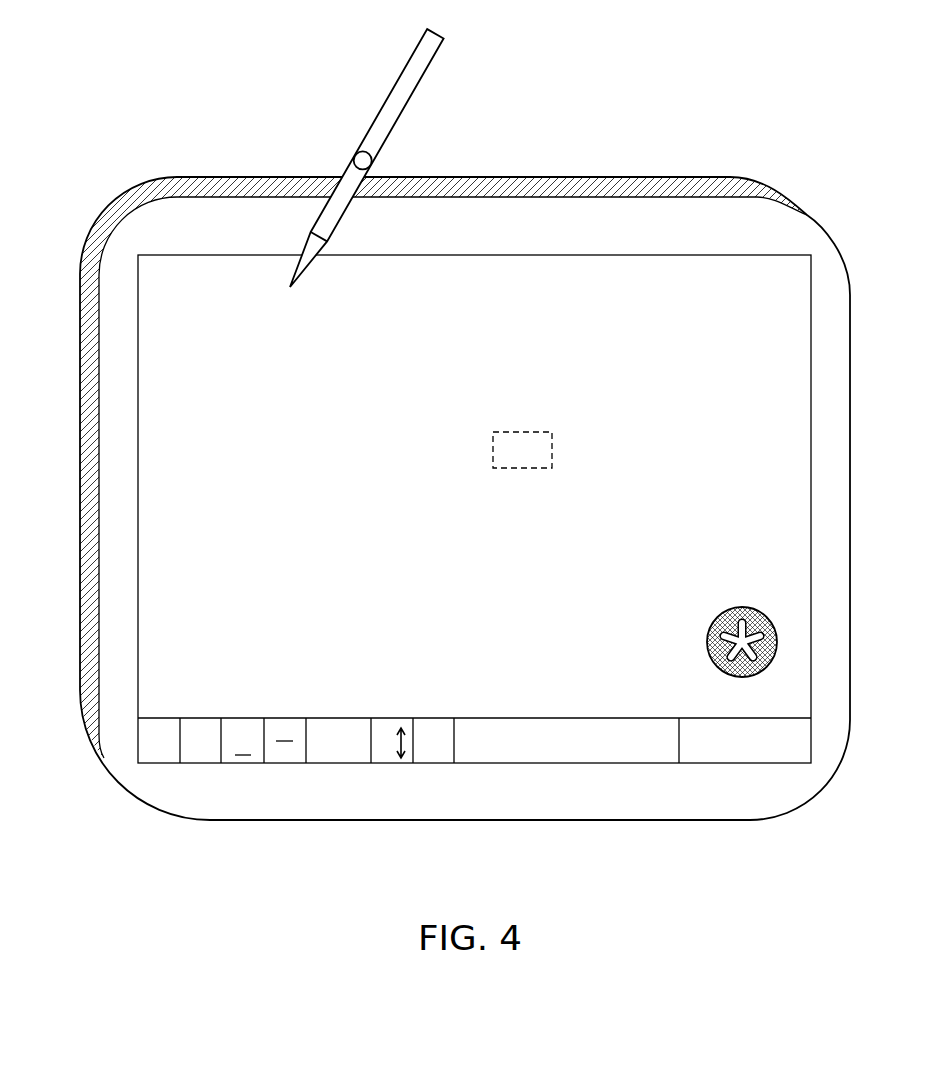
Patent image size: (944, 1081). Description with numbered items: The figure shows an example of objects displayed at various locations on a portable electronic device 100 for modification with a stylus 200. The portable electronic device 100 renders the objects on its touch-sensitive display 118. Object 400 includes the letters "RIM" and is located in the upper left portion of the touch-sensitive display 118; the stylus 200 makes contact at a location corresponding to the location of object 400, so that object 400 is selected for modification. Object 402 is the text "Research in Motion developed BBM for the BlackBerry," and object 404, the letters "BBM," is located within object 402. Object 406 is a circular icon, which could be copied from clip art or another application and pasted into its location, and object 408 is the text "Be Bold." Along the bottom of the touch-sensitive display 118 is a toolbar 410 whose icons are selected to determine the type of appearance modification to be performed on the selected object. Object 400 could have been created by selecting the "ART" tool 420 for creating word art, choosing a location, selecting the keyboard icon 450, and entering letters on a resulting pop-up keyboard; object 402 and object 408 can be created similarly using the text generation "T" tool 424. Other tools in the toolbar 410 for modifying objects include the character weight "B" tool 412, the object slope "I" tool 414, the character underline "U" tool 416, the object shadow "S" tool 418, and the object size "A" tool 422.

The portable electronic device 100 is at (208, 177).
The touch-sensitive display 118 is at (778, 255).
The stylus 200 is at (387, 97).
The object 400 is at (152, 312).
The object 402 is at (165, 450).
The object 404 is at (528, 432).
The object 406 is at (742, 607).
The object 408 is at (553, 622).
The toolbar 410 is at (138, 742).
The character weight "B" tool 412 is at (158, 763).
The object slope "I" tool 414 is at (201, 763).
The character underline "U" tool 416 is at (242, 763).
The object shadow "S" tool 418 is at (283, 763).
The "ART" tool 420 is at (336, 763).
The object size "A" tool 422 is at (392, 763).
The text generation "T" tool 424 is at (433, 763).
The keyboard icon 450 is at (746, 763).